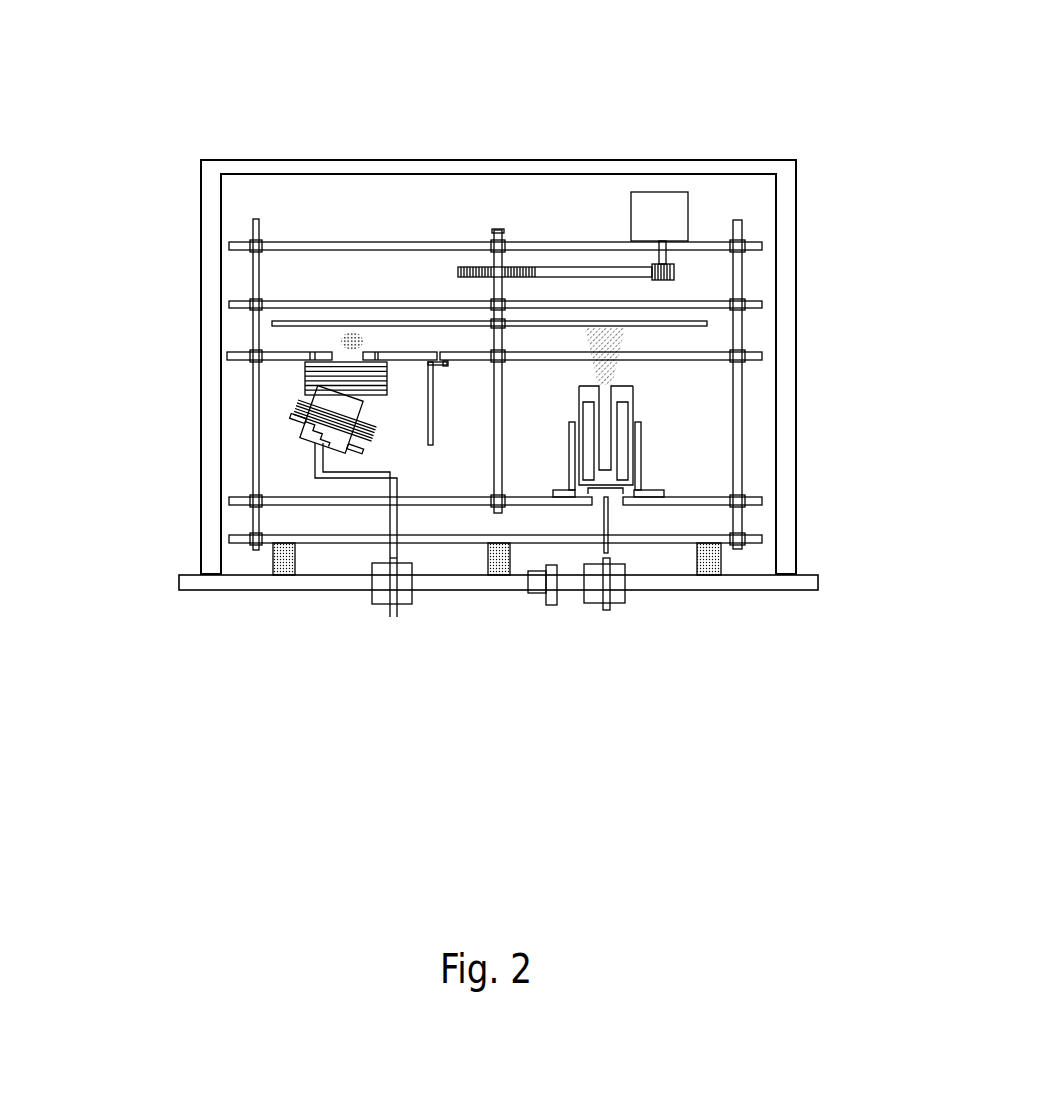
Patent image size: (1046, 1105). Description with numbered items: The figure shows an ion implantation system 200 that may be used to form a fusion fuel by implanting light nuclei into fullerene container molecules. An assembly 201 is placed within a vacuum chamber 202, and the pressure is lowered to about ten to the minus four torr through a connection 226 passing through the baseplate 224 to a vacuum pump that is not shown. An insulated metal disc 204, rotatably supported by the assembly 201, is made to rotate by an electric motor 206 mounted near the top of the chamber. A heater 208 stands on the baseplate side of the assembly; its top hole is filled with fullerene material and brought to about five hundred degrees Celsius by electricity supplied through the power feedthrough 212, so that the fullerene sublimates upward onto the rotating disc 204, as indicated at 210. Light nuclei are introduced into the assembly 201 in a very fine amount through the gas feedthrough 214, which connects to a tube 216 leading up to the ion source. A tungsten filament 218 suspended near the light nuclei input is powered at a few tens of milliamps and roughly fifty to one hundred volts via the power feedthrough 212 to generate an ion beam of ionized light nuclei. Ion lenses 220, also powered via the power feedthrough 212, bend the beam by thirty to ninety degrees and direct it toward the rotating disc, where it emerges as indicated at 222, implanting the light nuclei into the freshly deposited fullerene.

The ion implantation system 200 is at (446, 118).
The assembly 201 is at (724, 212).
The vacuum chamber 202 is at (264, 170).
The insulated metal disc 204 is at (272, 323).
The electric motor 206 is at (663, 212).
The heater 208 is at (622, 418).
The sublimating fullerene 210 is at (603, 343).
The power feedthrough 212 is at (620, 602).
The gas feedthrough 214 is at (378, 585).
The supply tube 216 is at (395, 618).
The tungsten filament 218 is at (303, 435).
The ion lenses 220 is at (300, 400).
The emerging ion beam 222 is at (342, 342).
The baseplate 224 is at (185, 587).
The connection 226 is at (552, 602).